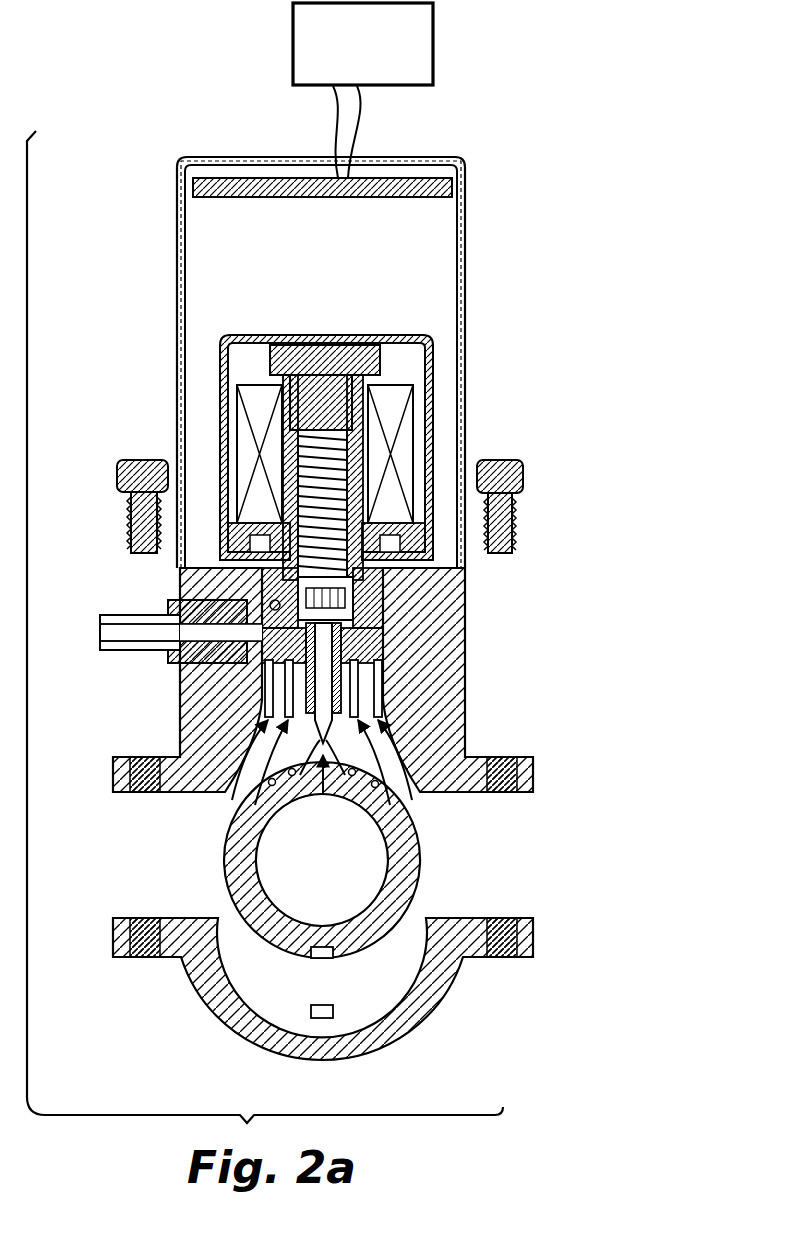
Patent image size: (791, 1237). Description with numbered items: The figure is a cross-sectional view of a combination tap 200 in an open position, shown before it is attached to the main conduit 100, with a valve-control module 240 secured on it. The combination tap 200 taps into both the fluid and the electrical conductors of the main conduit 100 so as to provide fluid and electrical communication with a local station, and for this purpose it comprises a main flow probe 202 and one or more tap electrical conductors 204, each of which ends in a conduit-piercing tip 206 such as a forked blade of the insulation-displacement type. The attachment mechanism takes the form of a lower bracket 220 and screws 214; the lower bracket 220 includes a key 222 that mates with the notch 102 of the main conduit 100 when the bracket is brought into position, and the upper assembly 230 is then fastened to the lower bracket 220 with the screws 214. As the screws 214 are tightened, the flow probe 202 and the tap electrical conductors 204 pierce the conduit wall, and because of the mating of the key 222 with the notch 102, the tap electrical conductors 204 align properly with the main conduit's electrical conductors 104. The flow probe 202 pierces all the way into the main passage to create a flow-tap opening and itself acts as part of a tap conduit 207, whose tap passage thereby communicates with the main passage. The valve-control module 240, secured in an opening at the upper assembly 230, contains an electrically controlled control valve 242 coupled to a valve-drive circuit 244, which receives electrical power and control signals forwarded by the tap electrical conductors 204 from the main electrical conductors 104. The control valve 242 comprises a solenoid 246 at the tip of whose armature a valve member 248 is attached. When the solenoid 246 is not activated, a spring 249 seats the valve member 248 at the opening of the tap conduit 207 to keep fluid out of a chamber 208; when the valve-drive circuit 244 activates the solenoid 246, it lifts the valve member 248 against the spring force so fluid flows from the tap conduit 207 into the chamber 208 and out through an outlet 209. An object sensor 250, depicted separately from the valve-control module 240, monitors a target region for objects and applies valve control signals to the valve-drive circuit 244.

The main conduit 100 is at (224, 870).
The notch 102 is at (321, 960).
The main electrical conductors 104 is at (373, 784).
The combination tap 200 is at (489, 724).
The main flow probe 202 is at (337, 776).
The tap electrical conductors 204 is at (288, 658).
The conduit-piercing tip 206 is at (234, 782).
The tap conduit 207 is at (345, 648).
The chamber 208 is at (300, 600).
The outlet 209 is at (108, 640).
The screws 214 is at (128, 509).
The lower bracket 220 is at (439, 995).
The key 222 is at (326, 1020).
The upper assembly 230 is at (470, 713).
The valve-control module 240 is at (469, 188).
The control valve 242 is at (436, 330).
The valve-drive circuit 244 is at (204, 203).
The solenoid 246 is at (332, 382).
The valve member 248 is at (358, 600).
The spring 249 is at (350, 436).
The object sensor 250 is at (290, 32).